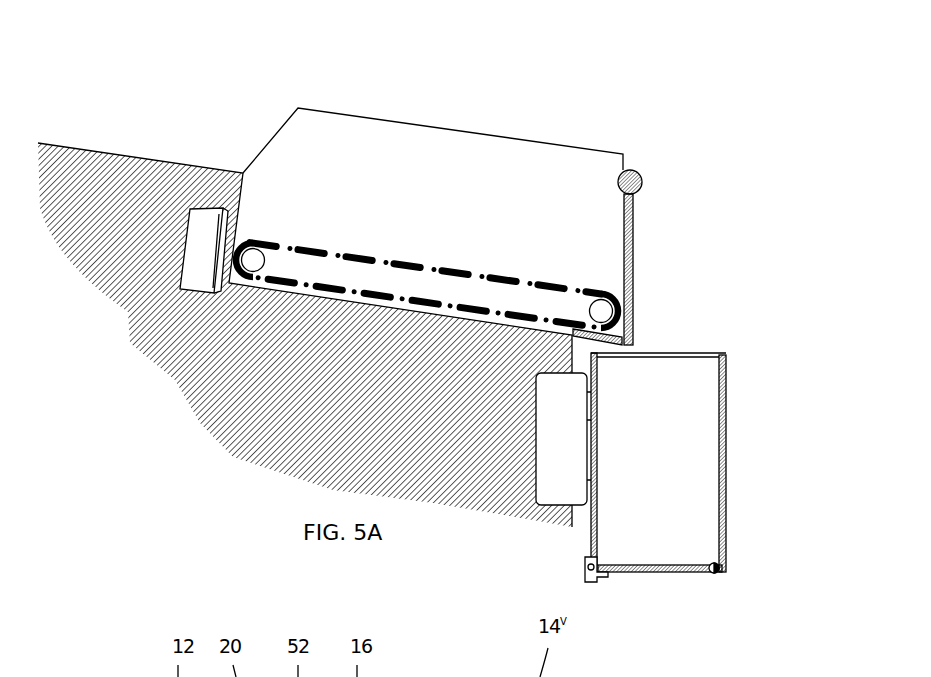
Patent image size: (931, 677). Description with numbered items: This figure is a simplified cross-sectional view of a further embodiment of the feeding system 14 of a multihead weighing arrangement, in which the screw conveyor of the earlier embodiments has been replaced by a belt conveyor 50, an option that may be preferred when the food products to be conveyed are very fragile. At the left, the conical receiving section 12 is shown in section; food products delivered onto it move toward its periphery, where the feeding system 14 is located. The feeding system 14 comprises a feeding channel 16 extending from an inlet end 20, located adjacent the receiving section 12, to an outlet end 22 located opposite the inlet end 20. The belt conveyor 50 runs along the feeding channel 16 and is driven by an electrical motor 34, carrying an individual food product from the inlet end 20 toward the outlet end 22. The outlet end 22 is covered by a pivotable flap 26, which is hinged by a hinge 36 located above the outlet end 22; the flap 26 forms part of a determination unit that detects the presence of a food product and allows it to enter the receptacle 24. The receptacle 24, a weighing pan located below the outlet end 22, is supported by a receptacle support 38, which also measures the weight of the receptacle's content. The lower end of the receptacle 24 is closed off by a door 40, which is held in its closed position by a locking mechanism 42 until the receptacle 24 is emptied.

The receiving section 12 is at (113, 146).
The feeding system 14 is at (491, 106).
The feeding channel 16 is at (340, 225).
The inlet end 20 is at (242, 200).
The outlet end 22 is at (612, 265).
The receptacle 24 is at (739, 418).
The flap 26 is at (636, 325).
The motor 34 is at (202, 247).
The hinge 36 is at (642, 183).
The receptacle support 38 is at (572, 428).
The door 40 is at (667, 572).
The locking mechanism 42 is at (612, 577).
The belt conveyor 50 is at (303, 247).